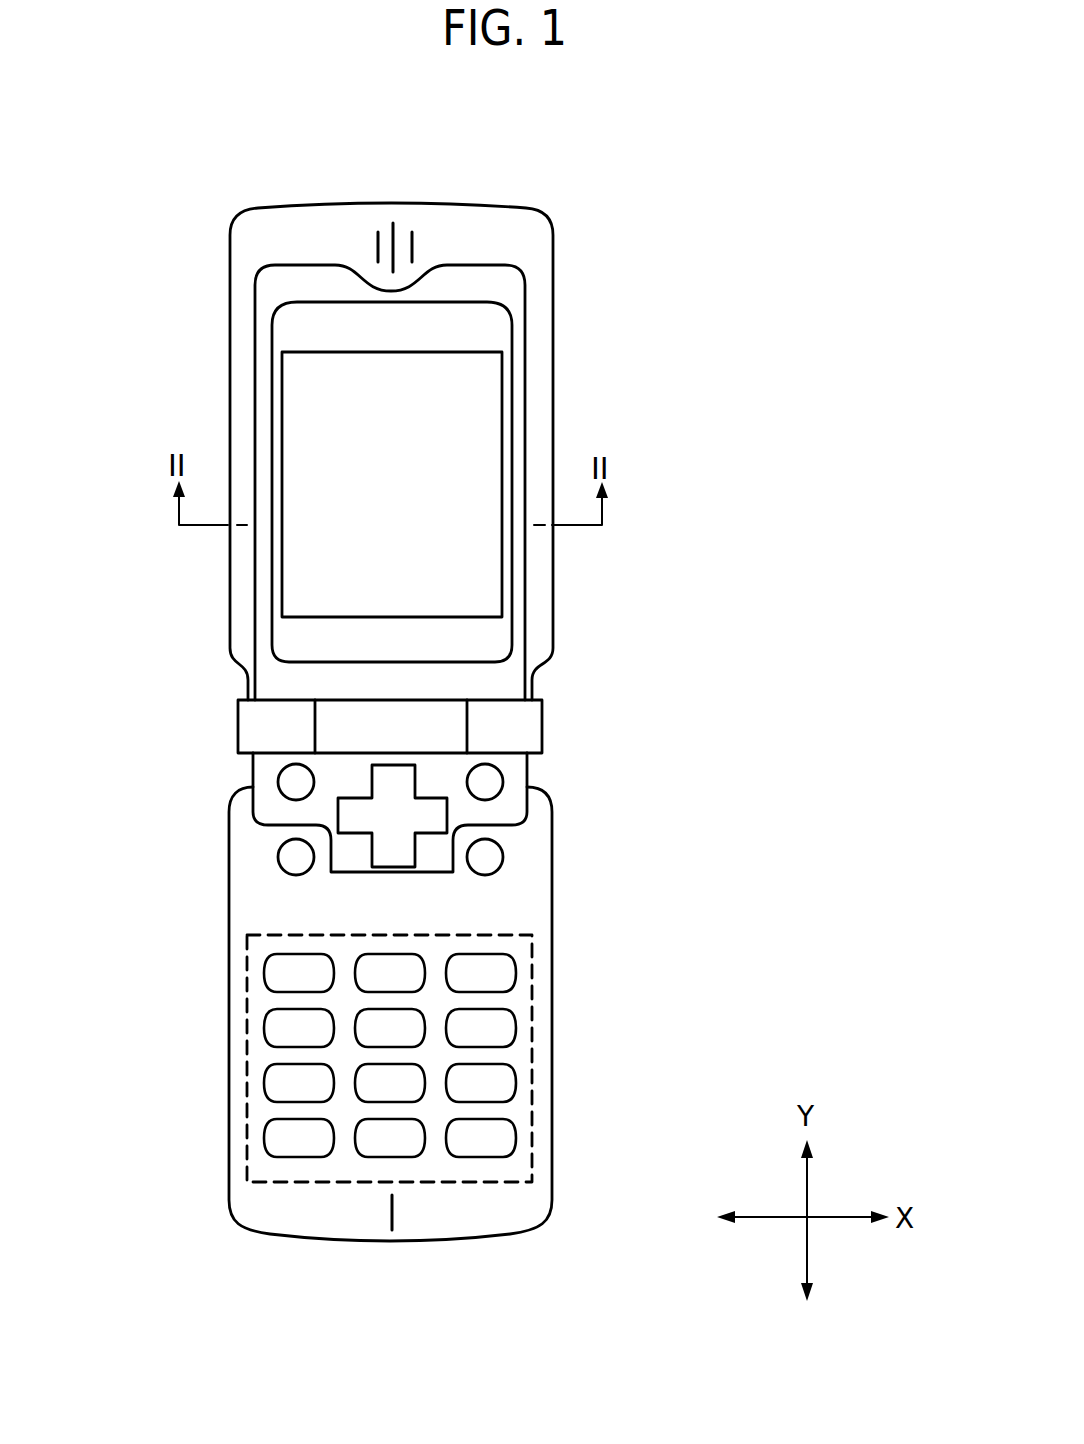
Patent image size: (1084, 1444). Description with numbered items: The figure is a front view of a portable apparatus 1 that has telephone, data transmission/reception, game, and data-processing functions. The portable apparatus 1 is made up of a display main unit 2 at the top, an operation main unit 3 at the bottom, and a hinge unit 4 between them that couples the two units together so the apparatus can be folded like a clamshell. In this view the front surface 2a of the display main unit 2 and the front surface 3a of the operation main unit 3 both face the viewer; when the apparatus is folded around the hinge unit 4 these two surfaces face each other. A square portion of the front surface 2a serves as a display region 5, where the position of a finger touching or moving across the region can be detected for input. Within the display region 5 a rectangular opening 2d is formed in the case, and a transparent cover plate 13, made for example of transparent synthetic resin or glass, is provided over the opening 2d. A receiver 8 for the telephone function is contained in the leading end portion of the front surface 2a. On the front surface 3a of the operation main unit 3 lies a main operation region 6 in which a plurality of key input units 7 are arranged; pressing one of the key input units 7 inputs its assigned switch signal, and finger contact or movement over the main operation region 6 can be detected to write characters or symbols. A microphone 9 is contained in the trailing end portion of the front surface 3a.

The portable apparatus 1 is at (590, 252).
The display main unit 2 is at (148, 697).
The front surface of the display main unit 2a is at (480, 243).
The rectangular opening 2d is at (499, 403).
The display region 5 is at (456, 494).
The transparent cover plate 13 is at (477, 575).
The receiver 8 is at (413, 243).
The hinge unit 4 is at (148, 702).
The operation main unit 3 is at (144, 1185).
The front surface of the operation main unit 3a is at (500, 897).
The main operation region 6 is at (581, 935).
The key input units 7 is at (383, 1160).
The microphone 9 is at (396, 1212).